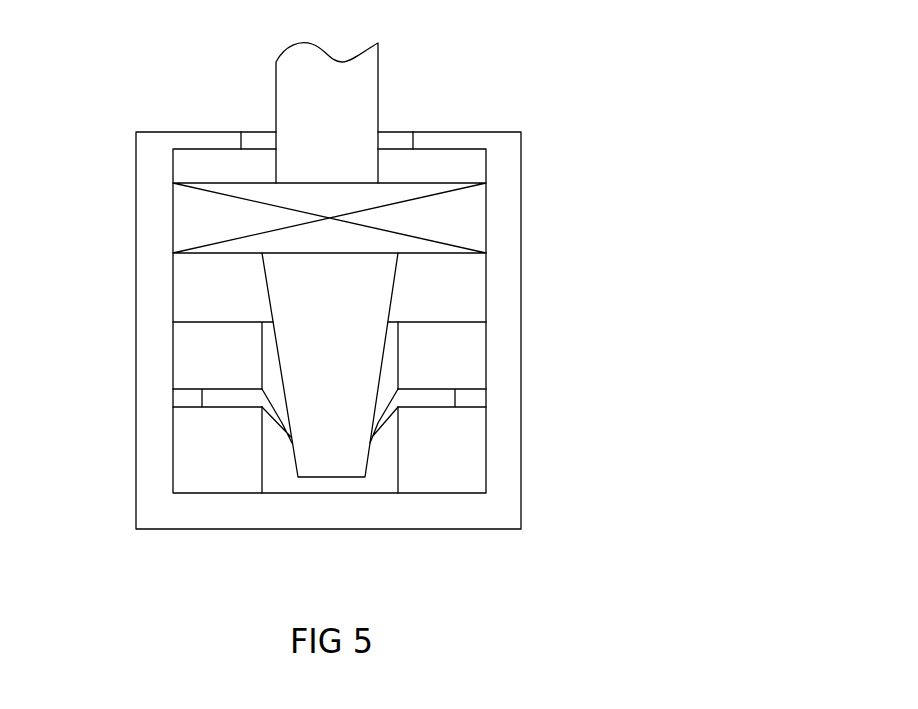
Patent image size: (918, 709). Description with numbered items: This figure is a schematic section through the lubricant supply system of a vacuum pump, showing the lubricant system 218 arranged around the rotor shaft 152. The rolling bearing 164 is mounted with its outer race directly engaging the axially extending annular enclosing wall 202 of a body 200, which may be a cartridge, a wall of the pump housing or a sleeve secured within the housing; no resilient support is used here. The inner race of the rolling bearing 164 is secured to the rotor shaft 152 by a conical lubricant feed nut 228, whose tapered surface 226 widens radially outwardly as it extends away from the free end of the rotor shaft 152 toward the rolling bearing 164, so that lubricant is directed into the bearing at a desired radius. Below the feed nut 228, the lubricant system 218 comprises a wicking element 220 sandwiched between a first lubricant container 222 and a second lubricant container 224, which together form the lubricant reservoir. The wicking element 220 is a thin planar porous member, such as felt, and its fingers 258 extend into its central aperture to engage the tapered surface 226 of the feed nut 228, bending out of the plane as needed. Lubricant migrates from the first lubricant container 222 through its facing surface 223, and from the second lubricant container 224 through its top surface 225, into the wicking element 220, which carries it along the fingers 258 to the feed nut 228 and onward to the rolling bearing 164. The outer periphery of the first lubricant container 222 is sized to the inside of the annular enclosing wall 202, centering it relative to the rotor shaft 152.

The rotor shaft 152 is at (358, 95).
The rolling bearing 164 is at (203, 227).
The body 200 is at (182, 128).
The annular enclosing wall 202 is at (507, 174).
The lubricant system 218 is at (198, 456).
The wicking element 220 is at (443, 398).
The first lubricant container 222 is at (458, 357).
The surface 223 is at (437, 388).
The second lubricant container 224 is at (473, 455).
The top surface 225 is at (211, 409).
The tapered surface 226 is at (260, 280).
The conical lubricant feed nut 228 is at (377, 283).
The fingers 258 is at (280, 420).